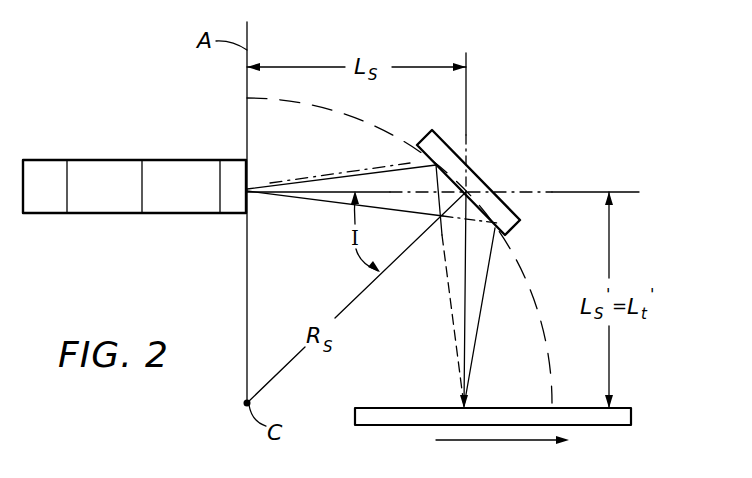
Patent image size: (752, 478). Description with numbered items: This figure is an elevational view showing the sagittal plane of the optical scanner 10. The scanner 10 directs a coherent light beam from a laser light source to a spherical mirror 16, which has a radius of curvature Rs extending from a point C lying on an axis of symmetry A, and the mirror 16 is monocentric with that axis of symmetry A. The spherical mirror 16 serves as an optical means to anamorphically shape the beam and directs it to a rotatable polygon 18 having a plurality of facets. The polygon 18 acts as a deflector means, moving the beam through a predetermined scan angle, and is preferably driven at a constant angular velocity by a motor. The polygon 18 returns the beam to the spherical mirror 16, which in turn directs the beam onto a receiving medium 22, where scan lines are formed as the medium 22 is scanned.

The optical scanner 10 is at (160, 143).
The spherical mirror 16 is at (474, 173).
The rotatable polygon 18 is at (167, 226).
The receiving medium 22 is at (624, 408).